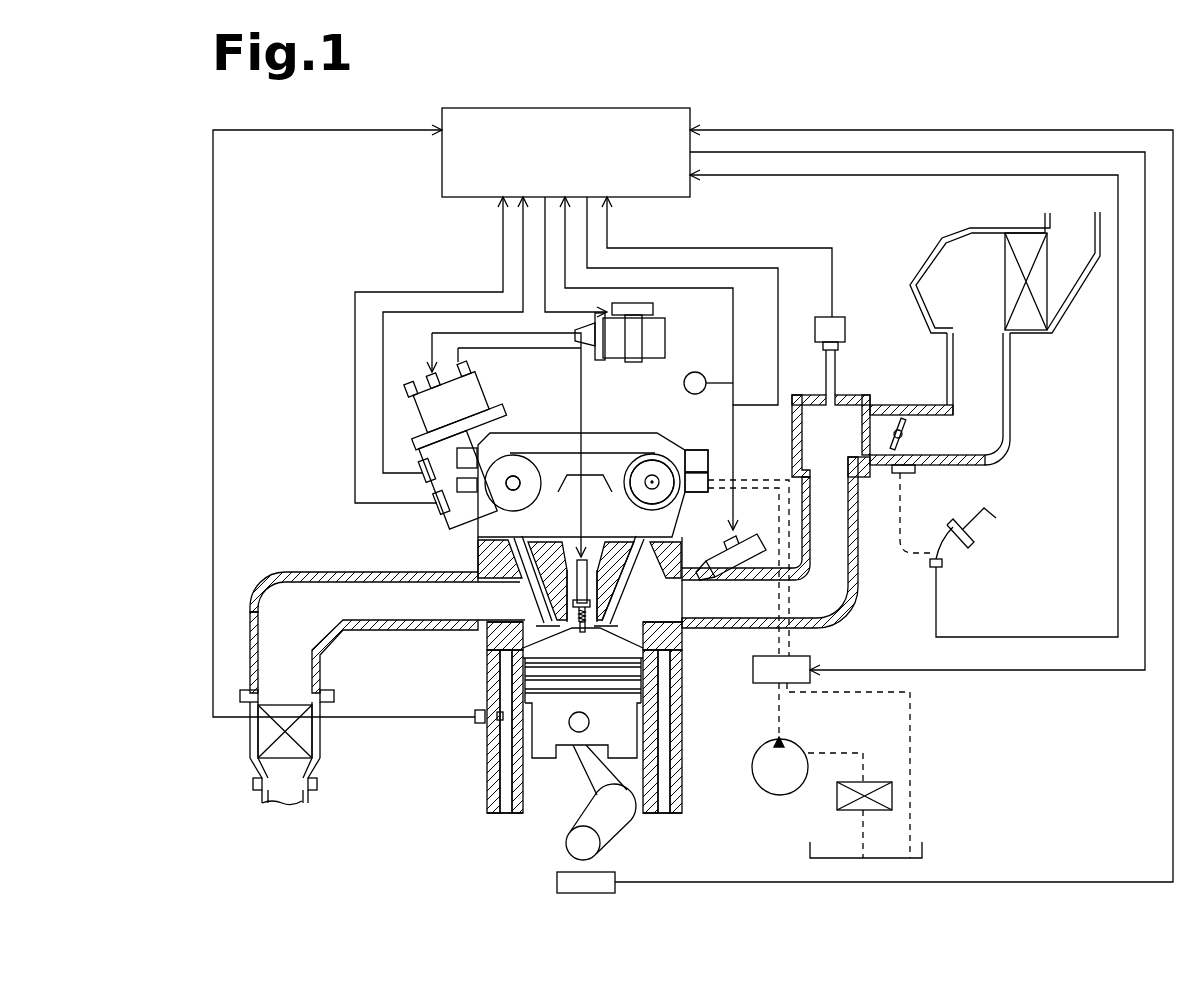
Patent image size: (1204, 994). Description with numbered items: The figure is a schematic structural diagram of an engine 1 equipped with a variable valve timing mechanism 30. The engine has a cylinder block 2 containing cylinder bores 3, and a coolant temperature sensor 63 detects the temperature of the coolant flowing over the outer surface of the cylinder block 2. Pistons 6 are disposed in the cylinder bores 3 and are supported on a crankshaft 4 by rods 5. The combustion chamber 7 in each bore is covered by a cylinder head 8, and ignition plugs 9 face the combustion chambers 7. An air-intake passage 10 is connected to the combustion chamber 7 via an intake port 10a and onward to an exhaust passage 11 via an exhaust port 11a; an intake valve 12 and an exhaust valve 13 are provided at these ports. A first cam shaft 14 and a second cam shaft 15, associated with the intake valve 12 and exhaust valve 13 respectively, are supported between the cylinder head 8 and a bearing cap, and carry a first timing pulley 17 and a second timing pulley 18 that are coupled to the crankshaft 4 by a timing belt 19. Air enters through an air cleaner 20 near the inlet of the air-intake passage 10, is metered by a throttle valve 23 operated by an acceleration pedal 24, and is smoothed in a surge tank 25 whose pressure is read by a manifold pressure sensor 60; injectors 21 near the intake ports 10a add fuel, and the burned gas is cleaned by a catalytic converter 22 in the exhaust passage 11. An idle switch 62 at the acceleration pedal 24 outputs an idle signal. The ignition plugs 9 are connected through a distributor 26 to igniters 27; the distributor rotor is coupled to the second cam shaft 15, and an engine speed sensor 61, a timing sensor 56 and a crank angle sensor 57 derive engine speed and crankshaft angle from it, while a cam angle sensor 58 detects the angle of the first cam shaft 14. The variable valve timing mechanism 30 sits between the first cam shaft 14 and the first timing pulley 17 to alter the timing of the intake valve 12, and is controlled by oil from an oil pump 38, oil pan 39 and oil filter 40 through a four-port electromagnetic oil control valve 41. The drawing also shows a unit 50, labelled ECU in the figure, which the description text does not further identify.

The engine 1 is at (704, 726).
The cylinder block 2 is at (676, 814).
The cylinder bores 3 is at (514, 815).
The crankshaft 4 is at (600, 853).
The rods 5 is at (597, 777).
The pistons 6 is at (567, 742).
The combustion chamber 7 is at (584, 624).
The cylinder head 8 is at (683, 544).
The ignition plugs 9 is at (588, 562).
The air-intake passage 10 is at (860, 584).
The intake port 10a is at (692, 595).
The exhaust passage 11 is at (376, 627).
The exhaust port 11a is at (497, 582).
The intake valve 12 is at (627, 618).
The exhaust valve 13 is at (477, 637).
The first cam shaft 14 is at (690, 462).
The second cam shaft 15 is at (520, 490).
The first timing pulley 17 is at (655, 478).
The second timing pulley 18 is at (515, 455).
The timing belt 19 is at (594, 453).
The air cleaner 20 is at (1005, 282).
The injectors 21 is at (742, 545).
The catalytic converter 22 is at (318, 730).
The throttle valve 23 is at (908, 427).
The acceleration pedal 24 is at (948, 520).
The surge tank 25 is at (802, 444).
The distributor 26 is at (476, 375).
The igniters 27 is at (665, 321).
The variable valve timing mechanism 30 is at (657, 445).
The oil pump 38 is at (762, 767).
The oil pan 39 is at (922, 848).
The oil filter 40 is at (837, 798).
The electromagnetic oil control valve 41 is at (753, 670).
The electronic control unit (ECU) 50 is at (442, 175).
The timing sensor 56 is at (426, 487).
The crank angle sensor 57 is at (557, 880).
The cam angle sensor 58 is at (694, 373).
The manifold pressure sensor 60 is at (846, 317).
The engine speed sensor 61 is at (446, 513).
The idle switch 62 is at (941, 567).
The coolant temperature sensor 63 is at (478, 726).